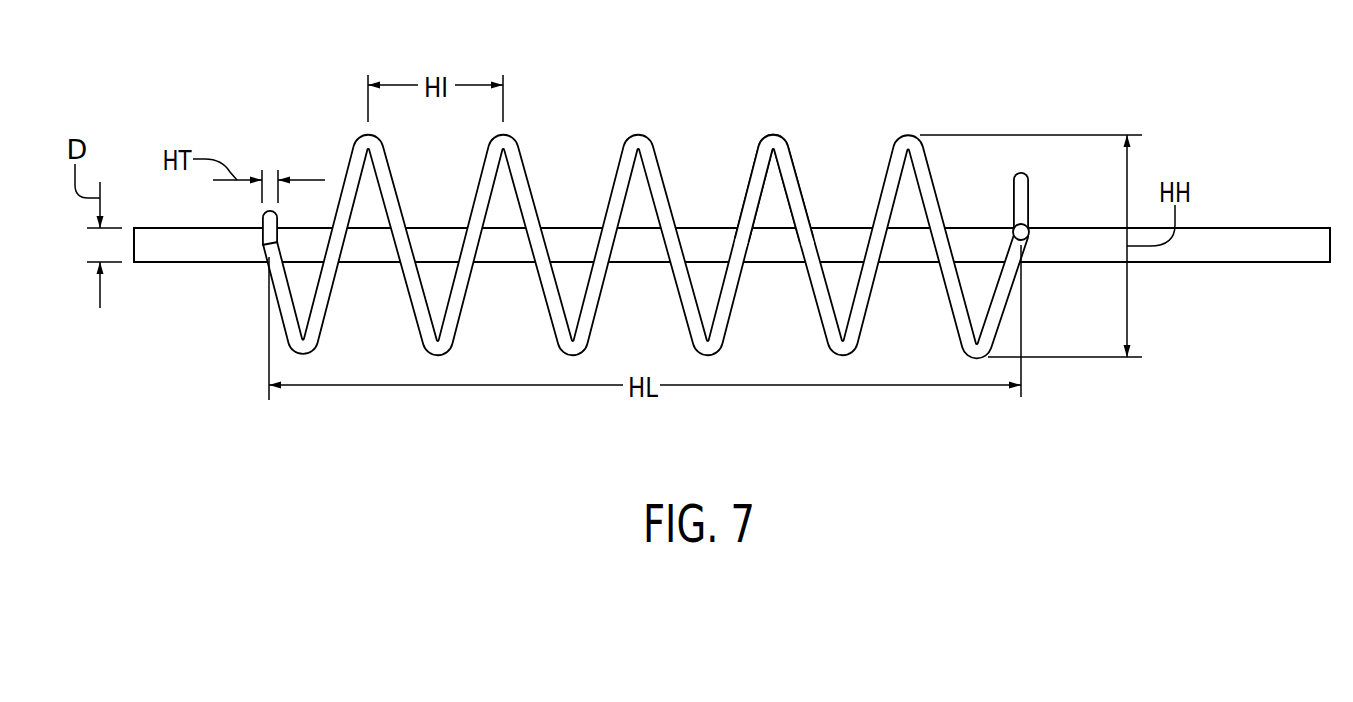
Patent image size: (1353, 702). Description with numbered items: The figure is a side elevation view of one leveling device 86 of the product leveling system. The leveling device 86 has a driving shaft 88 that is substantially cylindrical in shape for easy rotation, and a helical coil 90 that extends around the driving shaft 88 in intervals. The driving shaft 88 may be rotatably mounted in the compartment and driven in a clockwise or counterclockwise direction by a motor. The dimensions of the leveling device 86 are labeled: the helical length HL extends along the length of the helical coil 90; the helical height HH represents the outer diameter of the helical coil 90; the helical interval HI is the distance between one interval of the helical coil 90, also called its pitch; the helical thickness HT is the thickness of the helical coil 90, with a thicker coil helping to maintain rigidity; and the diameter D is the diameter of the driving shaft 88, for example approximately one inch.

The leveling device 86 is at (228, 338).
The driving shaft 88 is at (715, 238).
The helical coil 90 is at (770, 140).